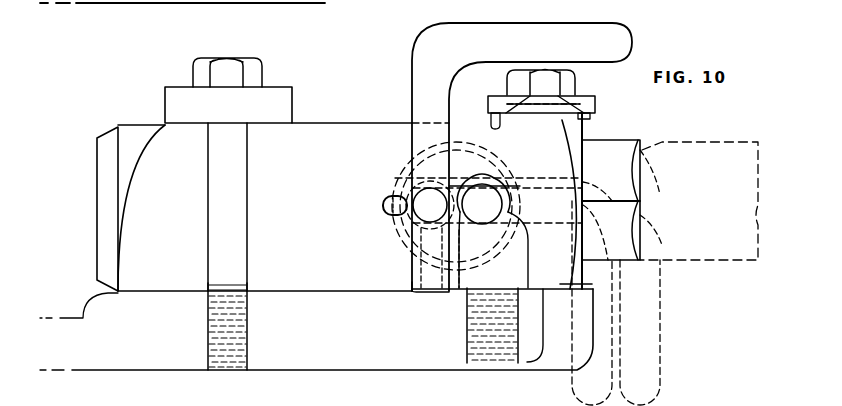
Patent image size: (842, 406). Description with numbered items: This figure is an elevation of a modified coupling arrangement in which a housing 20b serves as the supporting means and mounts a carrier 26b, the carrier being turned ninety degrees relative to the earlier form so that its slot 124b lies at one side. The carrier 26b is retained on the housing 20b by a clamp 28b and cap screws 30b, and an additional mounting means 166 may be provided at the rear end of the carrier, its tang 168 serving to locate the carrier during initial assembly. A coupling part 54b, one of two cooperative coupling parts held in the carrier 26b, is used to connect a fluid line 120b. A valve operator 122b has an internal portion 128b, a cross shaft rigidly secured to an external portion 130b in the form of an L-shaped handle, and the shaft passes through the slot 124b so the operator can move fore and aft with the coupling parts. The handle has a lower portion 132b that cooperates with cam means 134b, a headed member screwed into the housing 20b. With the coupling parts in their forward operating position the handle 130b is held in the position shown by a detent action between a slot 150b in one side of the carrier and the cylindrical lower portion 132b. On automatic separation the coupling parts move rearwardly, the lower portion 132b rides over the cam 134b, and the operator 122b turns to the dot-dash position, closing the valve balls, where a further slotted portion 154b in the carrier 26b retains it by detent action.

The housing 20b is at (450, 362).
The carrier 26b is at (113, 128).
The clamp 28b is at (168, 87).
The cap screws 30b is at (212, 183).
The coupling part 54b is at (629, 148).
The fluid line 120b is at (744, 142).
The valve operator 122b is at (404, 104).
The slot 124b is at (505, 174).
The internal portion 128b is at (400, 192).
The external portion (handle) 130b is at (616, 28).
The lower portion 132b is at (410, 298).
The cam means 134b is at (442, 318).
The slot 150b is at (418, 272).
The slotted portion 154b is at (383, 213).
The additional mounting means 166 is at (575, 83).
The tang 168 is at (542, 114).